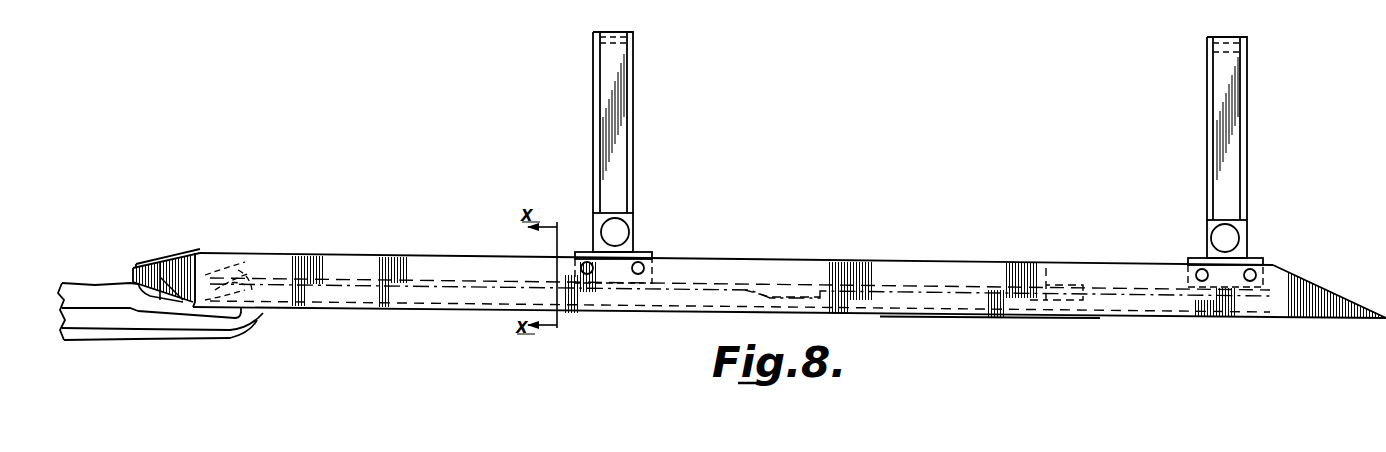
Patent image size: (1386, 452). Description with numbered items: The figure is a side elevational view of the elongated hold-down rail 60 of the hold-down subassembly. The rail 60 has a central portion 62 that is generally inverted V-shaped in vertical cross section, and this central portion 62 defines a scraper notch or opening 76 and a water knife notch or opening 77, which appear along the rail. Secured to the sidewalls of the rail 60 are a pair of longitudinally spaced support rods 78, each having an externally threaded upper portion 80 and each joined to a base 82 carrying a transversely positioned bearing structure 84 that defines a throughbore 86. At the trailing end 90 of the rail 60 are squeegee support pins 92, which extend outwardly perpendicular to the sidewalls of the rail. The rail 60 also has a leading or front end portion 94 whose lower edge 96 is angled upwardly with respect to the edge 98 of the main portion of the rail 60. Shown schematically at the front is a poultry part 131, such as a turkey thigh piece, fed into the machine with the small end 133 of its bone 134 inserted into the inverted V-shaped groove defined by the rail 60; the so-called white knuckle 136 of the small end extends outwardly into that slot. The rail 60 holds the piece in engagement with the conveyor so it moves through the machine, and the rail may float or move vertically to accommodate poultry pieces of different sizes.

The hold-down rail 60 is at (458, 255).
The central portion 62 is at (762, 255).
The scraper notch or opening 76 is at (797, 280).
The water knife notch or opening 77 is at (1048, 280).
The support rod 78 is at (586, 93).
The externally threaded upper portion 80 is at (627, 40).
The base 82 is at (635, 206).
The bearing structure 84 is at (593, 230).
The throughbore 86 is at (615, 232).
The trailing end 90 is at (1316, 272).
The squeegee support pin 92 is at (1247, 279).
The leading or front end portion 94 is at (239, 245).
The lower edge 96 is at (255, 320).
The edge 98 is at (953, 317).
The poultry part 131 is at (114, 257).
The small end 133 is at (174, 292).
The bone 134 is at (78, 312).
The white knuckle 136 is at (267, 260).